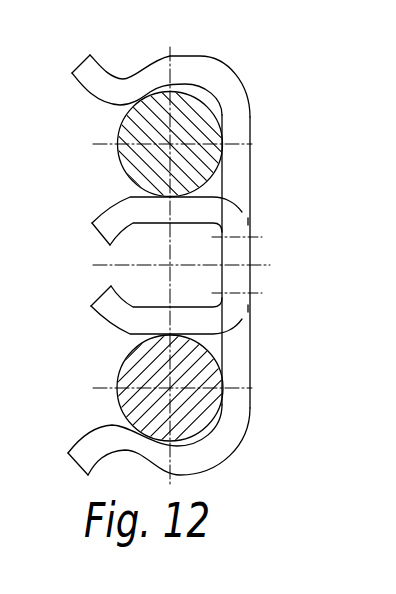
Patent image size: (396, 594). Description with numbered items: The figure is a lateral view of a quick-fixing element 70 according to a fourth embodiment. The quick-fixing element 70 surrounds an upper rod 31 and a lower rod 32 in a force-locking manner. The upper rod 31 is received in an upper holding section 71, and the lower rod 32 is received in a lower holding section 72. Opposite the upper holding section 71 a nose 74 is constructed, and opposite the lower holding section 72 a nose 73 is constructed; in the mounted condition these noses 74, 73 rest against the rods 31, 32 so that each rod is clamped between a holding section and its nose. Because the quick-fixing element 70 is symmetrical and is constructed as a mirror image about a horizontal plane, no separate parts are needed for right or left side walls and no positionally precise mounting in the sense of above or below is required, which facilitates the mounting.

The quick-fixing element 70 is at (240, 158).
The upper holding section 71 is at (212, 71).
The lower holding section 72 is at (200, 458).
The nose 73 is at (192, 323).
The nose 74 is at (197, 212).
The upper rod 31 is at (138, 153).
The lower rod 32 is at (141, 366).